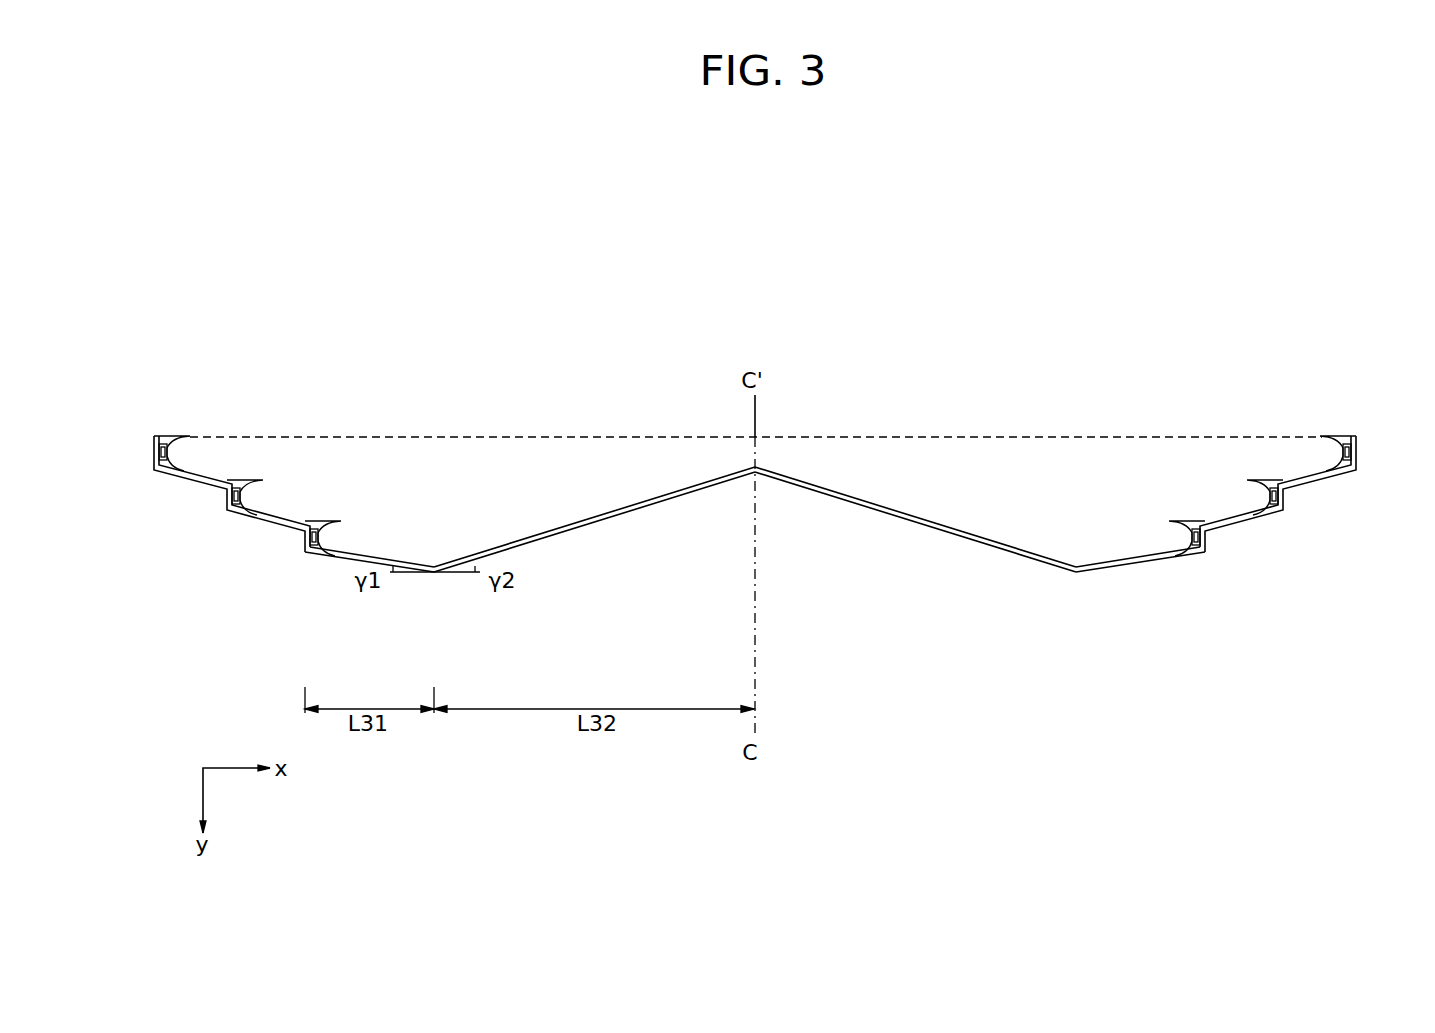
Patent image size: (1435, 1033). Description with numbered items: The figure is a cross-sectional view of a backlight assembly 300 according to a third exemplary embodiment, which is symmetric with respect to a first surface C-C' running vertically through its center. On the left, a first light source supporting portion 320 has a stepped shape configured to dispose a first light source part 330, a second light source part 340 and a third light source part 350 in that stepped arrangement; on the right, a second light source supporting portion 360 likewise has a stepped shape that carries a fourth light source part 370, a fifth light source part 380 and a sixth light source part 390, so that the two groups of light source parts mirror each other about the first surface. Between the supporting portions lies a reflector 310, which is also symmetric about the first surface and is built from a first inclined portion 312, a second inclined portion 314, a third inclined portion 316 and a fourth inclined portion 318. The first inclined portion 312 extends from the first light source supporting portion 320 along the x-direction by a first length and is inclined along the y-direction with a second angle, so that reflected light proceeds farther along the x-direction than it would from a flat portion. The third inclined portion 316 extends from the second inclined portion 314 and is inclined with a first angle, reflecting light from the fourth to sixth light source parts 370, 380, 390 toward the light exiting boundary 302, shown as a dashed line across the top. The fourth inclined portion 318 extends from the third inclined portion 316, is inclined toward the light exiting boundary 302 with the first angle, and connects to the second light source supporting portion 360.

The backlight assembly 300 is at (907, 338).
The light exiting boundary 302 is at (1164, 430).
The reflector 310 is at (1155, 650).
The first inclined portion 312 is at (333, 557).
The second inclined portion 314 is at (553, 540).
The third inclined portion 316 is at (1022, 557).
The fourth inclined portion 318 is at (1133, 567).
The first light source supporting portion 320 is at (228, 512).
The first light source part 330 is at (161, 451).
The second light source part 340 is at (235, 495).
The third light source part 350 is at (313, 537).
The second light source supporting portion 360 is at (1350, 478).
The fourth light source part 370 is at (1349, 451).
The fifth light source part 380 is at (1275, 495).
The sixth light source part 390 is at (1197, 537).